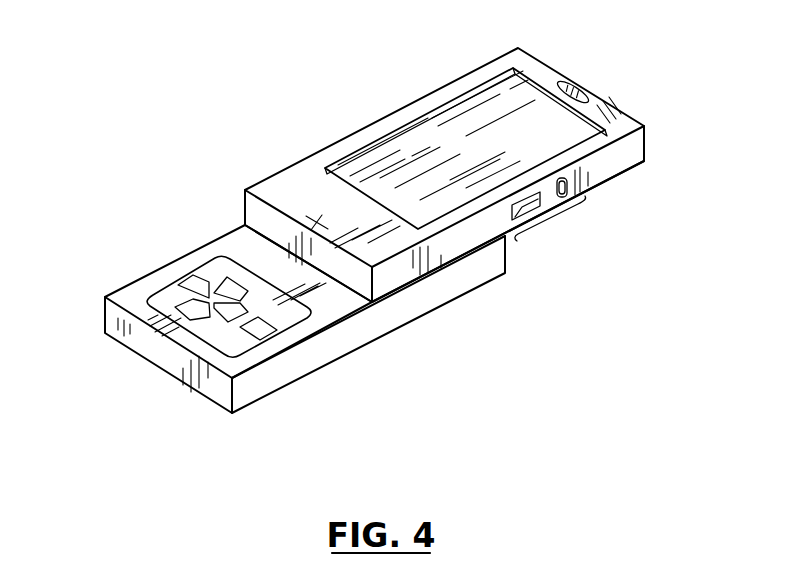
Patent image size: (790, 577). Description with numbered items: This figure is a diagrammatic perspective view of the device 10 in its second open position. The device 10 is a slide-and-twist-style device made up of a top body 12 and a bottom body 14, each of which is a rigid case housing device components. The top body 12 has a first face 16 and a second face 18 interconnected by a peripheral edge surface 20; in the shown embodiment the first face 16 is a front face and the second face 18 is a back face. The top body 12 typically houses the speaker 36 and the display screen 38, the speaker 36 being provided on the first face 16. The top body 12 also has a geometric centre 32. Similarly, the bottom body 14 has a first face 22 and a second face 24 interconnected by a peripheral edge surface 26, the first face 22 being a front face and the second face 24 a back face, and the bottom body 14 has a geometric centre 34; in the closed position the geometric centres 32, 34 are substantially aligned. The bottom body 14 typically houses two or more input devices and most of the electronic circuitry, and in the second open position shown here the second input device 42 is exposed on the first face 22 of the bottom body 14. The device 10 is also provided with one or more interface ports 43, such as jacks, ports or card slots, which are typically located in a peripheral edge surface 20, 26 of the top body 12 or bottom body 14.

The device 10 is at (200, 184).
The top body 12 is at (345, 132).
The bottom body 14 is at (455, 299).
The first face of the top body 16 is at (290, 177).
The second face of the top body 18 is at (618, 181).
The peripheral edge surface of the top body 20 is at (632, 160).
The first face of the bottom body 22 is at (238, 241).
The second face of the bottom body 24 is at (118, 345).
The peripheral edge surface of the bottom body 26 is at (247, 387).
The geometric centre of the top body 32 is at (447, 156).
The geometric centre of the bottom body 34 is at (324, 214).
The speaker 36 is at (577, 92).
The display screen 38 is at (487, 108).
The second input device 42 is at (284, 312).
The interface port 43 is at (557, 216).